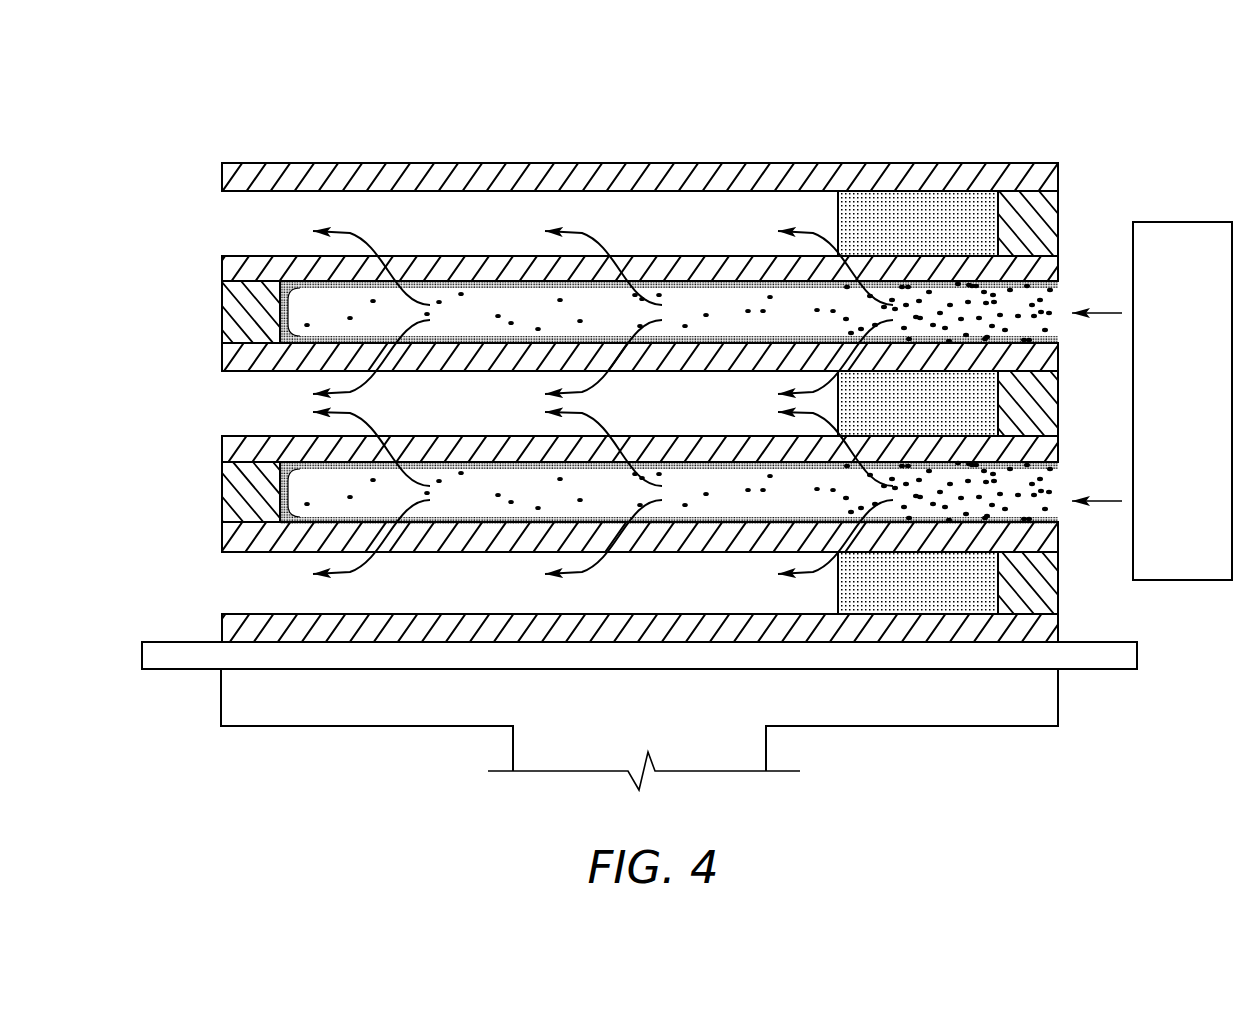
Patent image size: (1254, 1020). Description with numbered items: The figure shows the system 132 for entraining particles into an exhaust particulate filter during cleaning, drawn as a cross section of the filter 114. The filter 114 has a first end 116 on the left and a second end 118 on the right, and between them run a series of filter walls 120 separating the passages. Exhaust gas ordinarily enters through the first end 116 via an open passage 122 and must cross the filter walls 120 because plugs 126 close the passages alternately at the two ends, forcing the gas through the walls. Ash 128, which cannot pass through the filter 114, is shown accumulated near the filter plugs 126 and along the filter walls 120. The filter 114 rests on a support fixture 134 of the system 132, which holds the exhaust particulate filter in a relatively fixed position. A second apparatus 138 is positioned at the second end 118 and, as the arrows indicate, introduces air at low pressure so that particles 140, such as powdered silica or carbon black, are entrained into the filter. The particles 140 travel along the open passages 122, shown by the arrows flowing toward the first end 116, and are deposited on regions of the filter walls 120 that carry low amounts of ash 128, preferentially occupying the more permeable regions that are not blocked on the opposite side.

The filter 114 is at (1066, 105).
The first end 116 is at (208, 158).
The second end 118 is at (1066, 165).
The filter walls 120 is at (640, 270).
The open passage 122 is at (265, 407).
The plugs 126 is at (1023, 210).
The ash 128 is at (925, 210).
The system 132 is at (1067, 750).
The support fixture 134 is at (1110, 657).
The second apparatus 138 is at (1152, 401).
The particles 140 is at (288, 285).